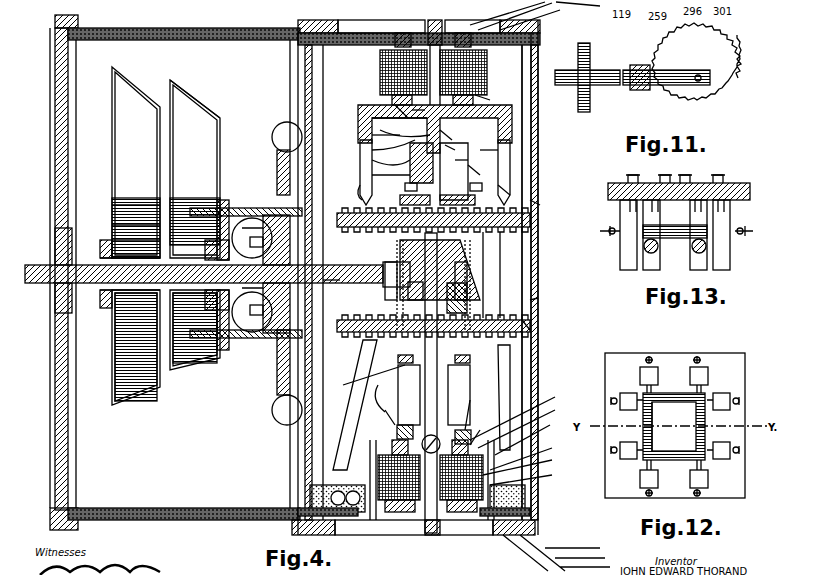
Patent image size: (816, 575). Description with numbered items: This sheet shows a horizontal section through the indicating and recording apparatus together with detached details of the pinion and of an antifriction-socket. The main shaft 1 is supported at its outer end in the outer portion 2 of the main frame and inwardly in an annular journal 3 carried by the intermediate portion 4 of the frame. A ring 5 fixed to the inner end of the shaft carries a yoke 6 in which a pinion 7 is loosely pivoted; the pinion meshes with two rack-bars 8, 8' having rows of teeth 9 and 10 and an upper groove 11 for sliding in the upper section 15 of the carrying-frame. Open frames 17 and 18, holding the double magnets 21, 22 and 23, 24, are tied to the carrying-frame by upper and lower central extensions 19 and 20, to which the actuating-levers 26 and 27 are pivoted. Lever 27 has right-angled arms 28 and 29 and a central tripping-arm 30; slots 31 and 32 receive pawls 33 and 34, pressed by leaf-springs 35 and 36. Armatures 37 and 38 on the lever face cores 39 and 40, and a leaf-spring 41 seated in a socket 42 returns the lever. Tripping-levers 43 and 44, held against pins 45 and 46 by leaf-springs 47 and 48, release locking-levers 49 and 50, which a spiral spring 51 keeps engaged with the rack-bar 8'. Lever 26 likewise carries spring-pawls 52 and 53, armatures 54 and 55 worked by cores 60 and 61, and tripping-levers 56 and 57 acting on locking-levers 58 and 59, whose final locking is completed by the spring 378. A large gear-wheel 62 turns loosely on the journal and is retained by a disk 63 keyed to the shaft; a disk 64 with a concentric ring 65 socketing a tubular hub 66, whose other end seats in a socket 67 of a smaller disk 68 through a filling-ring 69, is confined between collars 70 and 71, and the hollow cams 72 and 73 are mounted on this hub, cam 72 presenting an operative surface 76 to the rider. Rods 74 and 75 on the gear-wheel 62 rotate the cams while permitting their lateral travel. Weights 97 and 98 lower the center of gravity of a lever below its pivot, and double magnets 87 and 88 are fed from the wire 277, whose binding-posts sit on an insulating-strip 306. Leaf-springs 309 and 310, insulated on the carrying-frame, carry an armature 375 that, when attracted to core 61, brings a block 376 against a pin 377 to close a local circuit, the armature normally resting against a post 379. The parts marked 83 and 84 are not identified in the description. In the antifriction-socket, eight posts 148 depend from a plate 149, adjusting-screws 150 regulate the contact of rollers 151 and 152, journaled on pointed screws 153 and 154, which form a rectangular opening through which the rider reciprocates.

In FIG. 4, the main shaft 1 is at (40, 284).
In FIG. 11, the main shaft 1 is at (607, 72).
In FIG. 4, the outer portion of the main frame 2 is at (55, 20).
In FIG. 4, the annular journal 3 is at (335, 292).
In FIG. 4, the intermediate portion of the main frame 4 is at (312, 92).
In FIG. 4, the ring 5 is at (385, 265).
In FIG. 11, the ring 5 is at (640, 65).
In FIG. 4, the yoke 6 is at (400, 272).
In FIG. 11, the yoke 6 is at (700, 75).
In FIG. 4, the pinion 7 is at (438, 255).
In FIG. 11, the pinion 7 is at (696, 65).
In FIG. 4, the rack-bar 8 is at (449, 319).
In FIG. 4, the rack-bar 8' is at (444, 215).
In FIG. 4, the row of teeth 9 is at (505, 262).
In FIG. 4, the row of teeth 10 is at (520, 215).
In FIG. 4, the upper groove 11 is at (532, 312).
In FIG. 4, the upper section of the carrying-frame 15 is at (426, 281).
In FIG. 4, the open frame 17 is at (430, 540).
In FIG. 4, the open frame 18 is at (445, 28).
In FIG. 4, the upper central extension 19 is at (437, 408).
In FIG. 4, the lower central extension 20 is at (415, 28).
In FIG. 4, the double magnet 21 is at (378, 458).
In FIG. 4, the double magnet 22 is at (530, 477).
In FIG. 4, the double magnet 23 is at (382, 66).
In FIG. 4, the double magnet 24 is at (487, 72).
In FIG. 4, the actuating-lever 26 is at (438, 409).
In FIG. 4, the actuating-lever 27 is at (400, 118).
In FIG. 4, the right-angled arm 28 is at (358, 118).
In FIG. 4, the right-angled arm 29 is at (512, 135).
In FIG. 4, the central tripping-arm 30 is at (448, 150).
In FIG. 4, the open longitudinal slot 31 is at (367, 172).
In FIG. 4, the open longitudinal slot 32 is at (505, 172).
In FIG. 4, the pawl 33 is at (358, 190).
In FIG. 4, the pawl 34 is at (543, 172).
In FIG. 4, the leaf-spring 35 is at (372, 160).
In FIG. 4, the leaf-spring 36 is at (481, 169).
In FIG. 4, the armature 37 is at (400, 112).
In FIG. 4, the armature 38 is at (489, 146).
In FIG. 4, the core 39 is at (390, 100).
In FIG. 4, the core 40 is at (490, 100).
In FIG. 4, the leaf-spring 41 is at (470, 38).
In FIG. 4, the socket 42 is at (448, 30).
In FIG. 4, the angular tripping-lever 43 is at (372, 175).
In FIG. 4, the angular tripping-lever 44 is at (455, 172).
In FIG. 4, the pin 45 is at (372, 150).
In FIG. 4, the pin 46 is at (462, 162).
In FIG. 4, the leaf-spring 47 is at (372, 135).
In FIG. 4, the leaf-spring 48 is at (453, 133).
In FIG. 4, the locking-lever 49 is at (405, 188).
In FIG. 4, the locking-lever 50 is at (482, 188).
In FIG. 4, the spiral spring 51 is at (400, 200).
In FIG. 4, the spring-pawl 52 is at (350, 345).
In FIG. 4, the spring-pawl 53 is at (530, 350).
In FIG. 4, the armature 54 is at (405, 432).
In FIG. 4, the armature 55 is at (463, 437).
In FIG. 4, the tripping-lever 56 is at (434, 395).
In FIG. 4, the tripping-lever 57 is at (498, 380).
In FIG. 4, the locking-lever 58 is at (398, 360).
In FIG. 4, the locking-lever 59 is at (470, 360).
In FIG. 4, the core 60 is at (385, 552).
In FIG. 4, the core 61 is at (480, 545).
In FIG. 4, the large gear-wheel 62 is at (280, 165).
In FIG. 4, the disk 63 is at (262, 198).
In FIG. 11, the disk 63 is at (590, 102).
In FIG. 4, the disk 64 is at (224, 200).
In FIG. 4, the concentric ring 65 is at (232, 205).
In FIG. 4, the tubular hub 66 is at (112, 210).
In FIG. 4, the socket 67 is at (112, 230).
In FIG. 4, the smaller disk 68 is at (110, 245).
In FIG. 4, the filling-ring 69 is at (104, 255).
In FIG. 4, the collar 70 is at (104, 298).
In FIG. 4, the collar 71 is at (229, 320).
In FIG. 4, the hollow cam 72 is at (195, 225).
In FIG. 4, the hollow cam 73 is at (136, 236).
In FIG. 4, the rod 74 is at (264, 212).
In FIG. 4, the rod 75 is at (258, 336).
In FIG. 4, the operative surface 76 is at (215, 112).
In FIG. 4, the bar 83 is at (236, 336).
In FIG. 4, the pin 84 is at (257, 242).
In FIG. 4, the double magnet 87 is at (252, 312).
In FIG. 4, the double magnet 88 is at (252, 238).
In FIG. 4, the weight 97 is at (272, 412).
In FIG. 4, the weight 98 is at (272, 138).
In FIG. 13, the post 148 is at (620, 255).
In FIG. 12, the post 148 is at (658, 372).
In FIG. 12, the plate 149 is at (745, 362).
In FIG. 13, the adjusting-screw 150 is at (628, 172).
In FIG. 13, the roller 151 is at (660, 255).
In FIG. 12, the roller 151 is at (655, 417).
In FIG. 13, the roller 152 is at (675, 246).
In FIG. 12, the roller 152 is at (657, 440).
In FIG. 12, the pointed screw 153 is at (650, 356).
In FIG. 13, the pointed screw 154 is at (676, 227).
In FIG. 12, the pointed screw 154 is at (612, 397).
In FIG. 4, the wire 277 is at (377, 299).
In FIG. 4, the insulating-strip 306 is at (525, 492).
In FIG. 4, the leaf-spring 309 is at (365, 440).
In FIG. 4, the leaf-spring 310 is at (529, 463).
In FIG. 4, the armature 375 is at (535, 436).
In FIG. 4, the block 376 is at (524, 414).
In FIG. 4, the pin 377 is at (528, 425).
In FIG. 4, the spring 378 is at (366, 377).
In FIG. 4, the post 379 is at (533, 454).